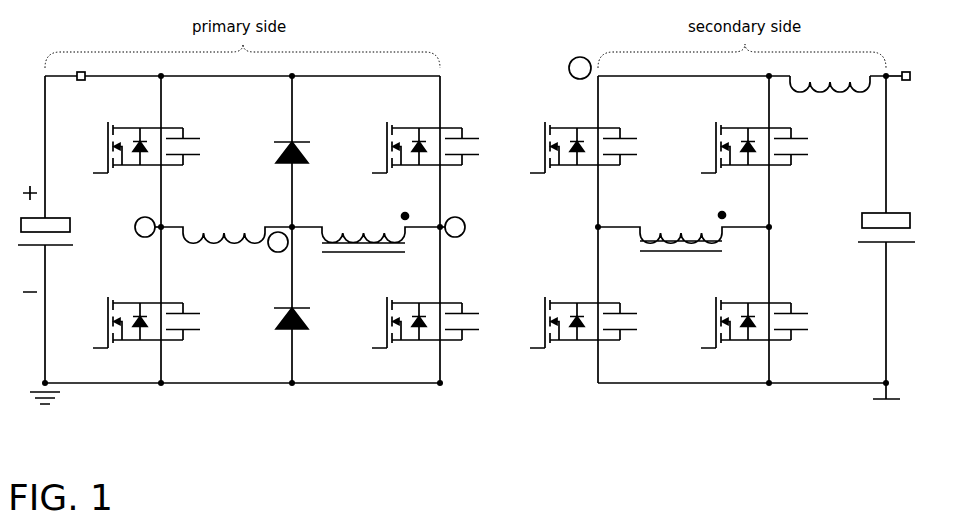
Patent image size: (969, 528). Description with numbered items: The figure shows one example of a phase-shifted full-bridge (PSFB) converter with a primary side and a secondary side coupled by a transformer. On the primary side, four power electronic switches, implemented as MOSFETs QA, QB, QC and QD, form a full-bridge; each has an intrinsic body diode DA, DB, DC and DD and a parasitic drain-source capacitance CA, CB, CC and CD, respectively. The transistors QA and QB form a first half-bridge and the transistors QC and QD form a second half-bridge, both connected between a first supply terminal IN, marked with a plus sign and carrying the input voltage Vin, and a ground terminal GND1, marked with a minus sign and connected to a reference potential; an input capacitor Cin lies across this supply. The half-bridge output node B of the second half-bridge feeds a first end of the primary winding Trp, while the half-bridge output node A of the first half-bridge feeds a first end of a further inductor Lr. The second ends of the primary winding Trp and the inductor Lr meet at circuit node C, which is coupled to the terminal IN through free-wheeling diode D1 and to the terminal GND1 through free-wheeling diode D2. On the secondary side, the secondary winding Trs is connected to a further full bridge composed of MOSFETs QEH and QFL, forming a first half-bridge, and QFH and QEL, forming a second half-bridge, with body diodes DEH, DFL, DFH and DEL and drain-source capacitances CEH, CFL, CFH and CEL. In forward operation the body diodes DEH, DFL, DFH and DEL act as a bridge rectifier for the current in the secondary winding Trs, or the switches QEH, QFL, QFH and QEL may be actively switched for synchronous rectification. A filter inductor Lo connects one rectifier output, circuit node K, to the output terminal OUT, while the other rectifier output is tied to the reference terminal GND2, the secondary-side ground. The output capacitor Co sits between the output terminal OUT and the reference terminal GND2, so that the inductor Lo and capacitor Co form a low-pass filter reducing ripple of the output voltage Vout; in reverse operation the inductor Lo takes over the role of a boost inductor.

The first supply terminal IN is at (93, 73).
The output terminal OUT is at (910, 65).
The ground terminal GND1 is at (70, 410).
The reference terminal GND2 is at (862, 405).
The input voltage Vin is at (48, 209).
The input capacitor Cin is at (46, 268).
The half-bridge output node A is at (148, 227).
The half-bridge output node B is at (452, 227).
The circuit node C is at (278, 242).
The circuit node K is at (580, 68).
The further inductor Lr is at (226, 223).
The primary winding Trp is at (366, 228).
The secondary winding Trs is at (683, 227).
The filter inductor Lo is at (830, 92).
The output capacitor Co is at (883, 246).
The output voltage Vout is at (847, 192).
The free-wheeling diode D1 is at (286, 143).
The free-wheeling diode D2 is at (286, 308).
The MOSFET QA is at (131, 147).
The body diode DA is at (143, 137).
The drain-source capacitance CA is at (184, 137).
The MOSFET QB is at (131, 322).
The body diode DB is at (143, 312).
The drain-source capacitance CB is at (184, 312).
The MOSFET QC is at (410, 147).
The body diode DC is at (422, 137).
The drain-source capacitance CC is at (463, 137).
The MOSFET QD is at (410, 322).
The body diode DD is at (423, 312).
The drain-source capacitance CD is at (464, 312).
The MOSFET QEH is at (566, 147).
The body diode DEH is at (580, 137).
The drain-source capacitance CEH is at (621, 137).
The MOSFET QEL is at (566, 322).
The body diode DEL is at (580, 312).
The drain-source capacitance CEL is at (621, 312).
The MOSFET QFH is at (737, 147).
The body diode DFH is at (751, 137).
The drain-source capacitance CFH is at (792, 137).
The MOSFET QFL is at (737, 322).
The body diode DFL is at (750, 312).
The drain-source capacitance CFL is at (791, 312).